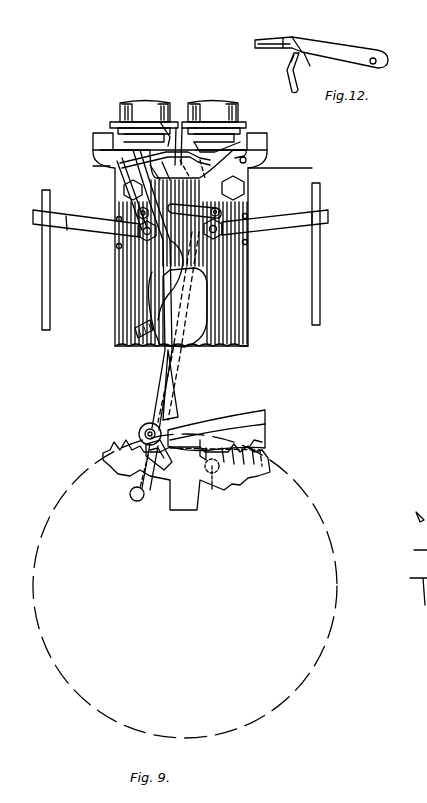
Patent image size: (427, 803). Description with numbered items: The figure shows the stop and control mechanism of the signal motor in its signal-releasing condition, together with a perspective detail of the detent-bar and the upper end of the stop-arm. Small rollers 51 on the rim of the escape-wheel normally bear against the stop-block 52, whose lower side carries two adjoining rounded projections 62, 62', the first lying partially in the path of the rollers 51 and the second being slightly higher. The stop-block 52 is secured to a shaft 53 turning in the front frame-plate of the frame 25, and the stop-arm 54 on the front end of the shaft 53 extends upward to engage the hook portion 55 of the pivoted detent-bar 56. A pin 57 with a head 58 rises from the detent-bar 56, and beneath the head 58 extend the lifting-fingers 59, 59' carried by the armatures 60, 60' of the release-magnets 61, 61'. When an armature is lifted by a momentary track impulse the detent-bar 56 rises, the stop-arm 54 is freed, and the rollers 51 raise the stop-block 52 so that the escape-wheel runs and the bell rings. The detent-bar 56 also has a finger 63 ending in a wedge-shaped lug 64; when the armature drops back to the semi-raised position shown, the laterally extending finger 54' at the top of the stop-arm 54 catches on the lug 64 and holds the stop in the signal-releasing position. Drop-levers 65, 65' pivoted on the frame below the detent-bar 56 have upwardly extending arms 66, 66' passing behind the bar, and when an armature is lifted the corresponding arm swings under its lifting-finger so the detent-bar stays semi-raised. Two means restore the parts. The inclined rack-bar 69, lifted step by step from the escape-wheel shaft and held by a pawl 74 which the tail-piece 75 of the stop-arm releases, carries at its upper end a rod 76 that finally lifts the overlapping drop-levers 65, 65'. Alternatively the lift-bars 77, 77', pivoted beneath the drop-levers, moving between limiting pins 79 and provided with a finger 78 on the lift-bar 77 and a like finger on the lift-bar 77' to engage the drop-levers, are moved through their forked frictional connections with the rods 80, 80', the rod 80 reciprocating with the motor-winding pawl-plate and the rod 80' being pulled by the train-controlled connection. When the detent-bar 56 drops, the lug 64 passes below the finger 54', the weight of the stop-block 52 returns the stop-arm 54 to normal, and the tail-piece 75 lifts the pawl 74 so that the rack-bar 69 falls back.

In FIG. 9, the housing body 25 is at (248, 303).
In FIG. 9, the rollers 51 is at (214, 483).
In FIG. 9, the stop-block 52 is at (250, 430).
In FIG. 9, the shaft 53 is at (143, 430).
In FIG. 12, the stop-arm 54 is at (282, 73).
In FIG. 9, the stop-arm 54 is at (144, 290).
In FIG. 12, the laterally extending finger 54' is at (276, 61).
In FIG. 12, the hook portion 55 is at (315, 67).
In FIG. 9, the hook portion 55 is at (165, 166).
In FIG. 12, the detent-bar 56 is at (345, 47).
In FIG. 9, the detent-bar 56 is at (256, 150).
In FIG. 9, the pin 57 is at (192, 169).
In FIG. 9, the head 58 is at (178, 128).
In FIG. 9, the lifting-finger 59 is at (249, 132).
In FIG. 9, the lifting-finger 59' is at (162, 112).
In FIG. 9, the armature 60 is at (228, 124).
In FIG. 9, the armature 60' is at (133, 124).
In FIG. 9, the release-magnet 61 is at (217, 103).
In FIG. 9, the release-magnet 61' is at (144, 100).
In FIG. 9, the rounded projection 62 is at (242, 431).
In FIG. 9, the rounded projection 62' is at (211, 429).
In FIG. 12, the finger 63 is at (283, 38).
In FIG. 9, the finger 63 is at (128, 150).
In FIG. 12, the wedge-shaped lug 64 is at (256, 44).
In FIG. 9, the wedge-shaped lug 64 is at (105, 166).
In FIG. 9, the drop-lever 65 is at (223, 199).
In FIG. 9, the drop-lever 65' is at (117, 209).
In FIG. 9, the arm 66 is at (289, 167).
In FIG. 9, the arm 66' is at (184, 188).
In FIG. 9, the rack-bar 69 is at (178, 408).
In FIG. 9, the pawl 74 is at (144, 479).
In FIG. 9, the tail-piece 75 is at (166, 468).
In FIG. 9, the rod 76 is at (171, 307).
In FIG. 9, the lift-bar 77 is at (280, 220).
In FIG. 9, the lift-bar 77' is at (94, 230).
In FIG. 9, the finger 78 is at (179, 280).
In FIG. 9, the pins 79 is at (117, 222).
In FIG. 9, the rod 80 is at (329, 254).
In FIG. 9, the rod 80' is at (32, 260).